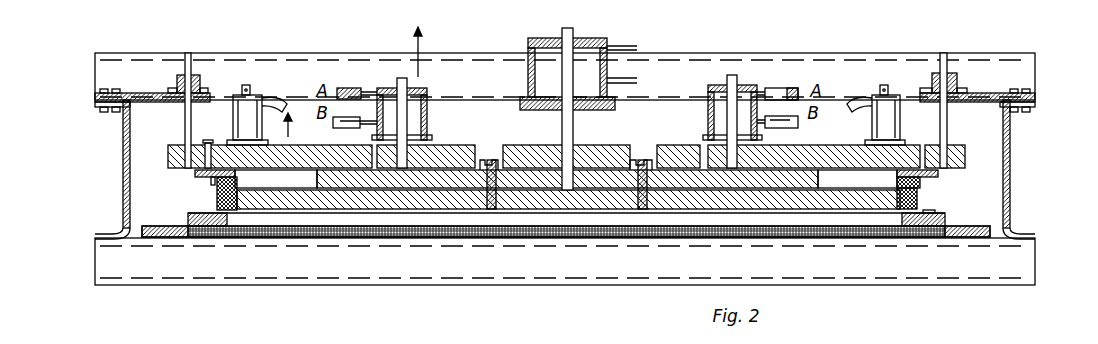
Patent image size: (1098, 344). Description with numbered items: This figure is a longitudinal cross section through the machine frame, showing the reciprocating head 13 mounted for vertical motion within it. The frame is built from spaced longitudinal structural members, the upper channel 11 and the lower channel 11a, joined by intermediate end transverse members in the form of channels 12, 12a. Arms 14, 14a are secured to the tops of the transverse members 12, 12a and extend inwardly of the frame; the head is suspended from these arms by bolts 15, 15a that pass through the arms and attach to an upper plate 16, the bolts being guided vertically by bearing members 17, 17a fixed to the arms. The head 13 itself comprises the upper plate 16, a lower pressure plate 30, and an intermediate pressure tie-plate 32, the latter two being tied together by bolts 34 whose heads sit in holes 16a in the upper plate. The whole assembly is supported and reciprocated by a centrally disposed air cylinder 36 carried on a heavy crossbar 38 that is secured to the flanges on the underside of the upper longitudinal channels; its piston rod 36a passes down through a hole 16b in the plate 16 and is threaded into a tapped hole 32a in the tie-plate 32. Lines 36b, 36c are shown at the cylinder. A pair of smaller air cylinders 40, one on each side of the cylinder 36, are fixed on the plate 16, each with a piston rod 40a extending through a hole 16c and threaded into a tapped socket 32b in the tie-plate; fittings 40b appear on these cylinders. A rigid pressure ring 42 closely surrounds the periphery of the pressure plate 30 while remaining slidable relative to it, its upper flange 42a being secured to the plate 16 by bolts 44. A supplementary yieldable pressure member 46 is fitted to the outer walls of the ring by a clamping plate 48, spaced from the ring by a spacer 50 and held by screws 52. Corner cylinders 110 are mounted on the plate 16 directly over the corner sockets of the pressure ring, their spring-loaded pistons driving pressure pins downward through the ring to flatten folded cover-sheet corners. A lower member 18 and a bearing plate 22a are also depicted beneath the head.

The upper longitudinal channel 11 is at (146, 82).
The lower longitudinal channel 11a is at (224, 270).
The transverse end channel 12 is at (124, 166).
The transverse end channel 12a is at (1010, 168).
The reciprocating head 13 is at (160, 172).
The guide arm 14 is at (155, 93).
The guide arm 14a is at (978, 96).
The suspension bolt 15 is at (185, 115).
The suspension bolt 15a is at (947, 118).
The upper plate 16 is at (172, 159).
The bolt head holes 16a is at (655, 148).
The piston rod hole 16b is at (583, 148).
The piston rod holes 16c is at (362, 150).
The bearing member 17 is at (198, 76).
The bearing member 17a is at (958, 75).
The base 18 is at (128, 231).
The bearing plate 22a is at (967, 224).
The pressure plate 30 is at (410, 209).
The pressure tie-plate 32 is at (315, 174).
The tapped hole 32a is at (558, 170).
The tapped socket 32b is at (408, 172).
The tie bolts 34 is at (490, 209).
The central air cylinder 36 is at (528, 75).
The piston rod 36a is at (566, 130).
The fluid line 36b is at (629, 45).
The fluid line 36c is at (637, 81).
The crossbar 38 is at (522, 103).
The air cylinders 40 is at (427, 122).
The piston rod 40a is at (408, 148).
The fluid fitting 40b is at (355, 88).
The pressure ring 42 is at (240, 207).
The upper flange 42a is at (850, 192).
The flange bolts 44 is at (208, 140).
The yieldable pressure member 46 is at (187, 216).
The clamping plate 48 is at (217, 194).
The spacer 50 is at (917, 200).
The screws 52 is at (210, 187).
The corner cylinders 110 is at (252, 105).